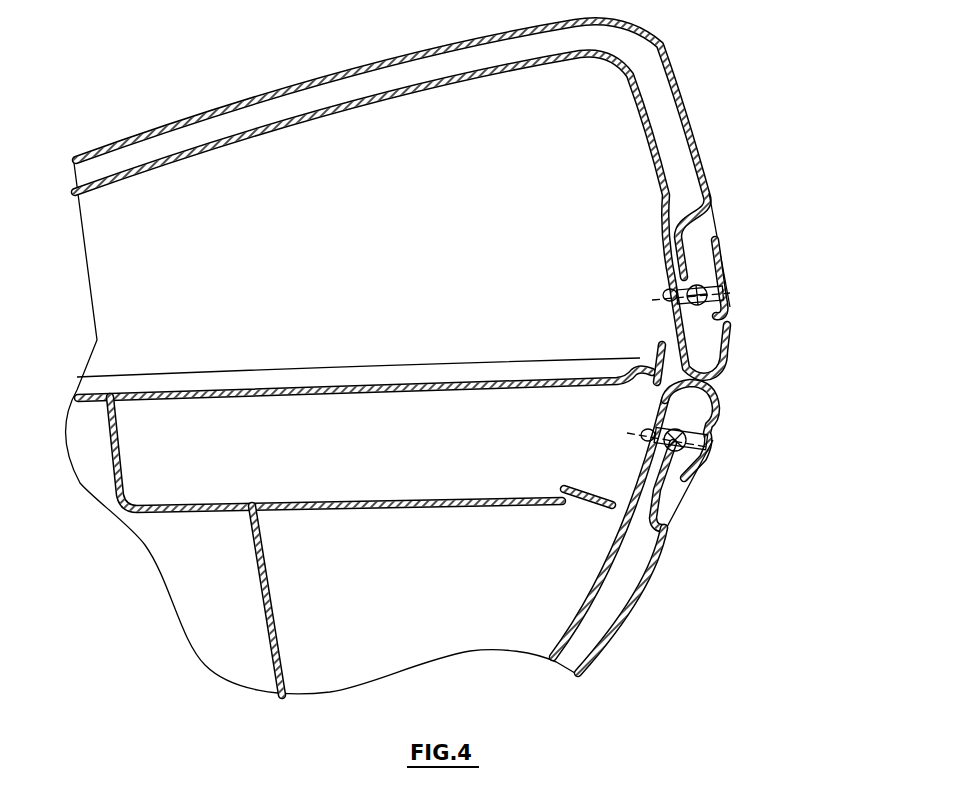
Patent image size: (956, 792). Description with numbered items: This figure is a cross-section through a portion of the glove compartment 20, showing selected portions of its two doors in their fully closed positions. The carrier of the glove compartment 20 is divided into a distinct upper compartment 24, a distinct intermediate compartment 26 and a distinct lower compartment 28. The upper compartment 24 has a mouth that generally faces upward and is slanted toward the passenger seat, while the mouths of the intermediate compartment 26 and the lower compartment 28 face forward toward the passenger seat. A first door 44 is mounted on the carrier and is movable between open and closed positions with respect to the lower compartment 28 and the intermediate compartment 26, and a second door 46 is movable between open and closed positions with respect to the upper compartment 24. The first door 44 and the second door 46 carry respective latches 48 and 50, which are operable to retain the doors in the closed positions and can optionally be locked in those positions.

The glove compartment 20 is at (757, 158).
The upper compartment 24 is at (617, 130).
The intermediate compartment 26 is at (561, 427).
The lower compartment 28 is at (583, 570).
The first door 44 is at (640, 593).
The second door 46 is at (692, 122).
The latch 48 is at (727, 403).
The latch 50 is at (727, 245).